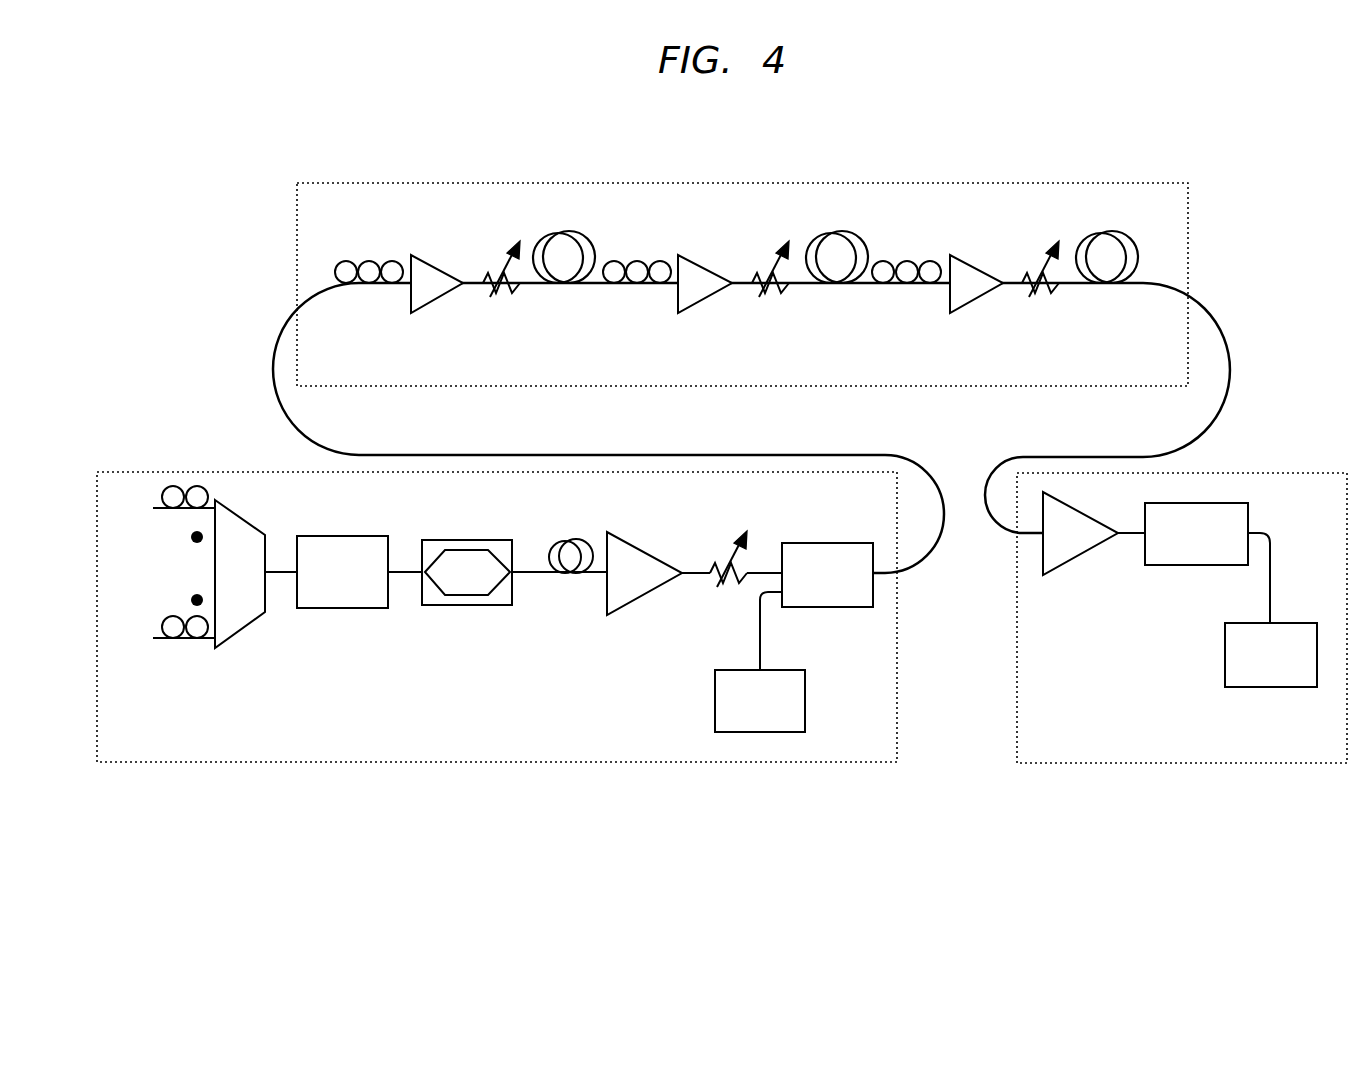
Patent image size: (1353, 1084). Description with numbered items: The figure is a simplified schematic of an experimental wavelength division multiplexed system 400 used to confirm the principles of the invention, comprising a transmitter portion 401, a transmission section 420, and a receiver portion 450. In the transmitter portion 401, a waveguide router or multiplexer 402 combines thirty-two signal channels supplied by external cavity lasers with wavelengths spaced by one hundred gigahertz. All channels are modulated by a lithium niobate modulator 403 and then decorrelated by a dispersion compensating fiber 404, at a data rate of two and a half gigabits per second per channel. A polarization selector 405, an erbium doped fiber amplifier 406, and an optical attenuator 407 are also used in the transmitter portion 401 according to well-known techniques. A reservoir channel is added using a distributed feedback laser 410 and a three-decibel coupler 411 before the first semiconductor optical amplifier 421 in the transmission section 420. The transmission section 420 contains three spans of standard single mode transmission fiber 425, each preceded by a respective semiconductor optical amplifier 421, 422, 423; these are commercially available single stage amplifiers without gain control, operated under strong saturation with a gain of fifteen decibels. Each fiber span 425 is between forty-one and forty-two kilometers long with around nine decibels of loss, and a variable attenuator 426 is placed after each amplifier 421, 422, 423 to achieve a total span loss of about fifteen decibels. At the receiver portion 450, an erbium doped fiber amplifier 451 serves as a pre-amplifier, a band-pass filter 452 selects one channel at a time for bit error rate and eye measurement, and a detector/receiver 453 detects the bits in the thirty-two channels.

The wavelength division multiplexed system 400 is at (754, 116).
The transmitter portion 401 is at (490, 762).
The waveguide router (multiplexer) 402 is at (240, 520).
The LiNbO3 modulator 403 is at (463, 541).
The dispersion compensating fiber 404 is at (568, 540).
The polarization selector 405 is at (343, 536).
The erbium doped fiber amplifier 406 is at (642, 594).
The optical attenuator 407 is at (717, 563).
The distributed feedback laser 410 is at (715, 700).
The 3 dB coupler 411 is at (847, 543).
The transmission section 420 is at (873, 183).
The semiconductor optical amplifier 421 is at (409, 309).
The semiconductor optical amplifier 422 is at (676, 309).
The semiconductor optical amplifier 423 is at (947, 309).
The transmission fiber span 425 is at (590, 232).
The variable attenuator 426 is at (488, 272).
The receiver portion 450 is at (1187, 763).
The erbium doped fiber amplifier 451 is at (1072, 562).
The band-pass filter 452 is at (1227, 565).
The detector/receiver 453 is at (1225, 655).